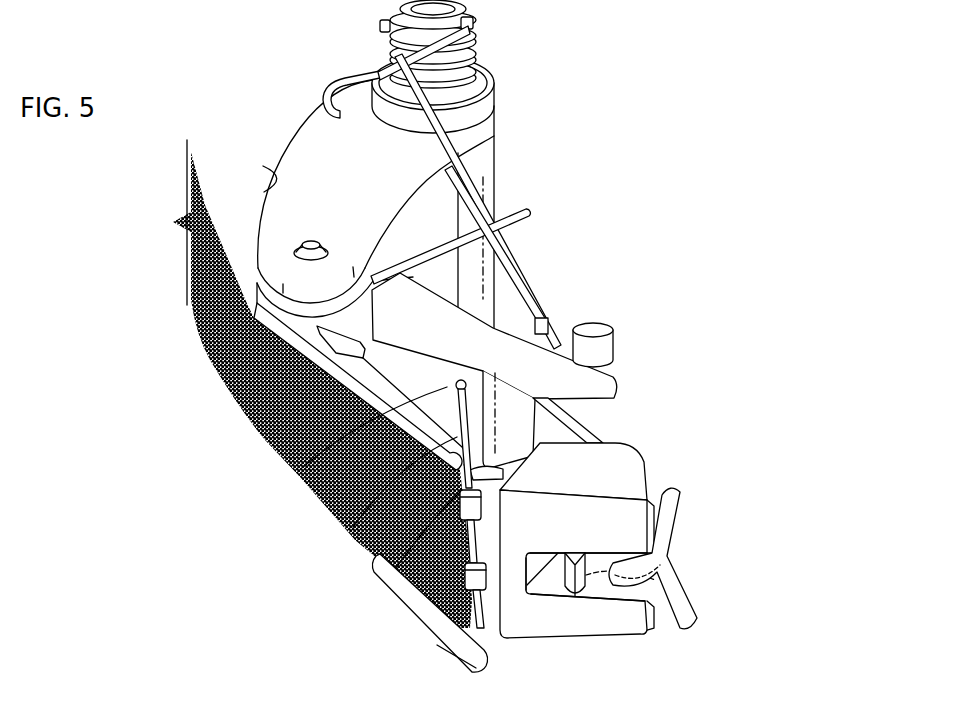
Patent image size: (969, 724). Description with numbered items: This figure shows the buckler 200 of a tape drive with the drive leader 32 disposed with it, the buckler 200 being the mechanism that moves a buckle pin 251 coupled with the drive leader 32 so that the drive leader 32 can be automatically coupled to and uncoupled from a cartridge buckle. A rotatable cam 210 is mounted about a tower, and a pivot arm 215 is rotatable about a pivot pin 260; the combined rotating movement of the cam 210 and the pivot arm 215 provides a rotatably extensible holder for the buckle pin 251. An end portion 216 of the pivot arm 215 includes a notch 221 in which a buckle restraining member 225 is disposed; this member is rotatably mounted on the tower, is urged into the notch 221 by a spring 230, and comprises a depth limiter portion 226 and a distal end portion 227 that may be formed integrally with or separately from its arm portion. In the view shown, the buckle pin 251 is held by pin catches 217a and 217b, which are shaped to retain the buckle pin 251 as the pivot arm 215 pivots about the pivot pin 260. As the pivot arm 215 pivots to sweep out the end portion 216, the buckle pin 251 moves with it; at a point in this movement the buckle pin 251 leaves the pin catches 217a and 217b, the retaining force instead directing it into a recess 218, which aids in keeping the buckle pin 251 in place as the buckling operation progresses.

The buckler 200 is at (215, 41).
The drive leader 32 is at (203, 328).
The rotatable cam 210 is at (300, 128).
The spring 230 is at (467, 40).
The pivot pin 260 is at (298, 238).
The pivot arm 215 is at (535, 352).
The buckle restraining member 225 is at (583, 420).
The end portion 216 is at (612, 513).
The notch 221 is at (603, 590).
The distal end portion 227 is at (580, 578).
The depth limiter portion 226 is at (667, 510).
The buckle pin 251 is at (443, 440).
The pin catch 217a is at (352, 525).
The recess 218 is at (388, 558).
The pin catch 217b is at (445, 618).